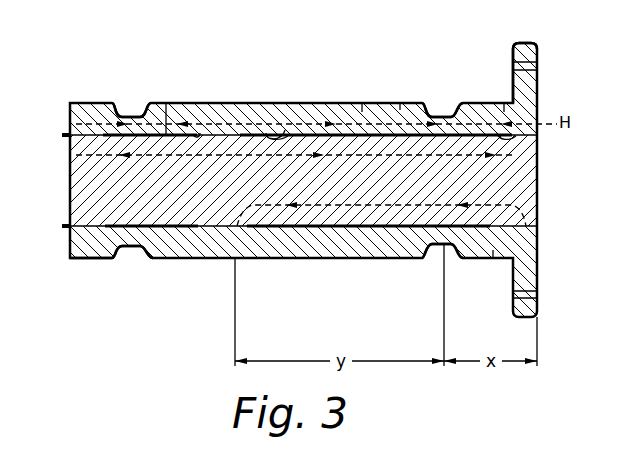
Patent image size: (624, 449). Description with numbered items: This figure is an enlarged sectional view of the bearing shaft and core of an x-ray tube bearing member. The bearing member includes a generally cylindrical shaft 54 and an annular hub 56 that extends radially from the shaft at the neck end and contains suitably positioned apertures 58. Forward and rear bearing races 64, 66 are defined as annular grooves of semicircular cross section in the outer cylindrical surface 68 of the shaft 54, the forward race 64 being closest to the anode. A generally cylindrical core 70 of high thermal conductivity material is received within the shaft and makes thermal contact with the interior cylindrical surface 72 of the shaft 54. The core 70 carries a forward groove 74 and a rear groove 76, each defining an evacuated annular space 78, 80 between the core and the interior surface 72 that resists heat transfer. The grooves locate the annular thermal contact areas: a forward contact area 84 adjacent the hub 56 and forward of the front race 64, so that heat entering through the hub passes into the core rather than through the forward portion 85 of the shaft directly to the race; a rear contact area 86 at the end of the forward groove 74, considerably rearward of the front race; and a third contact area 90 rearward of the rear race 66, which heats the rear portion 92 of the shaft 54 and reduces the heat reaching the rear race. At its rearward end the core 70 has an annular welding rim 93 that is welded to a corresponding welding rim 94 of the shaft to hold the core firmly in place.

The shaft 54 is at (318, 112).
The annular hub 56 is at (525, 43).
The apertures 58 is at (537, 66).
The forward bearing race 64 is at (455, 103).
The rear bearing race 66 is at (134, 117).
The outer cylindrical surface 68 is at (270, 259).
The core 70 is at (497, 182).
The interior cylindrical surface 72 is at (285, 130).
The forward groove 74 is at (362, 103).
The rear groove 76 is at (166, 103).
The annular space 78 is at (400, 103).
The annular space 80 is at (200, 133).
The forward contact area 84 is at (497, 133).
The forward portion 85 is at (504, 112).
The rear contact area 86 is at (266, 133).
The third contact area 90 is at (96, 133).
The rear portion 92 is at (93, 259).
The welding rim 93 is at (62, 225).
The welding rim 94 is at (62, 229).